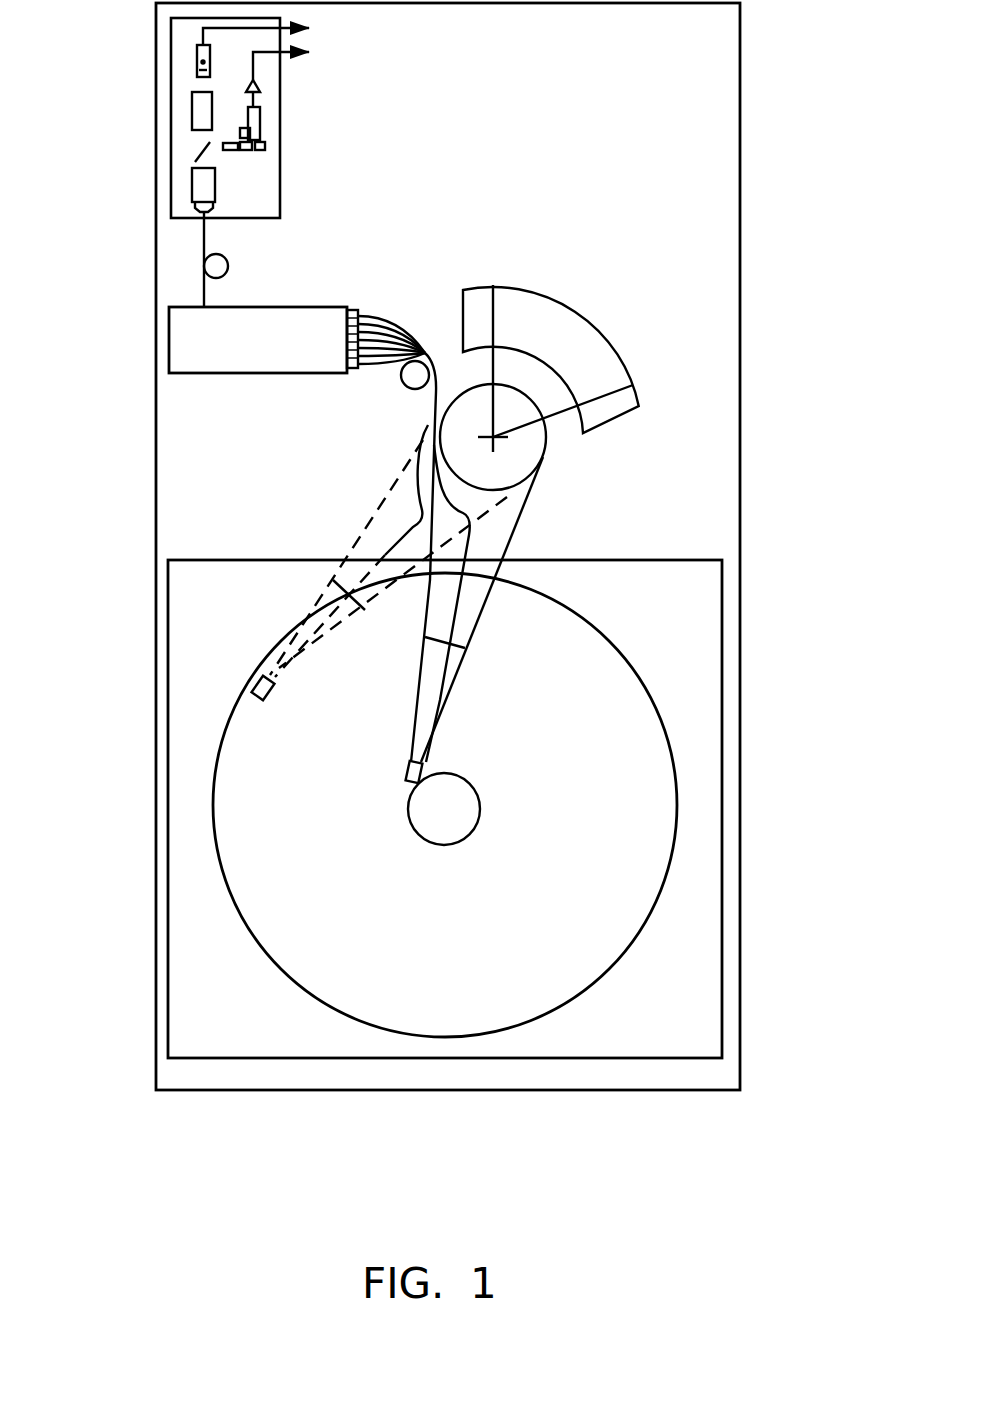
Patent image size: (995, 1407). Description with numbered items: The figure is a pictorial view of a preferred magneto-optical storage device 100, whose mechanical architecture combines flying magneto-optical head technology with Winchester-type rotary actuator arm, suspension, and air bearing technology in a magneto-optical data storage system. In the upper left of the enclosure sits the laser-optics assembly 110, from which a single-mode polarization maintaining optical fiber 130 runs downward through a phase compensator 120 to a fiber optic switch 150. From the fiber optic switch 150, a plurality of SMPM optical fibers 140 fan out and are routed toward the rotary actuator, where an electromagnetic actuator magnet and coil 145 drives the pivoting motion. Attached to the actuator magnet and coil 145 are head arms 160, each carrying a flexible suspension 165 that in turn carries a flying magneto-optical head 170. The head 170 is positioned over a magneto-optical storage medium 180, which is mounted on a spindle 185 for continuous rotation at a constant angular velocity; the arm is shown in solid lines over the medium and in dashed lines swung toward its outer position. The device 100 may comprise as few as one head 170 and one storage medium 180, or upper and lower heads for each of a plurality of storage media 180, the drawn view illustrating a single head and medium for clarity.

The magneto-optical storage device 100 is at (878, 852).
The laser-optics assembly 110 is at (172, 73).
The phase compensator 120 is at (225, 268).
The single-mode polarization maintaining optical fiber 130 is at (203, 277).
The plurality of SMPM optical fibers 140 is at (403, 320).
The actuator magnet and coil 145 is at (614, 379).
The fiber optic switch 150 is at (295, 377).
The head arms 160 is at (480, 621).
The suspensions 165 is at (441, 700).
The flying magneto-optical heads 170 is at (402, 780).
The MO storage media 180 is at (668, 881).
The spindle 185 is at (458, 825).